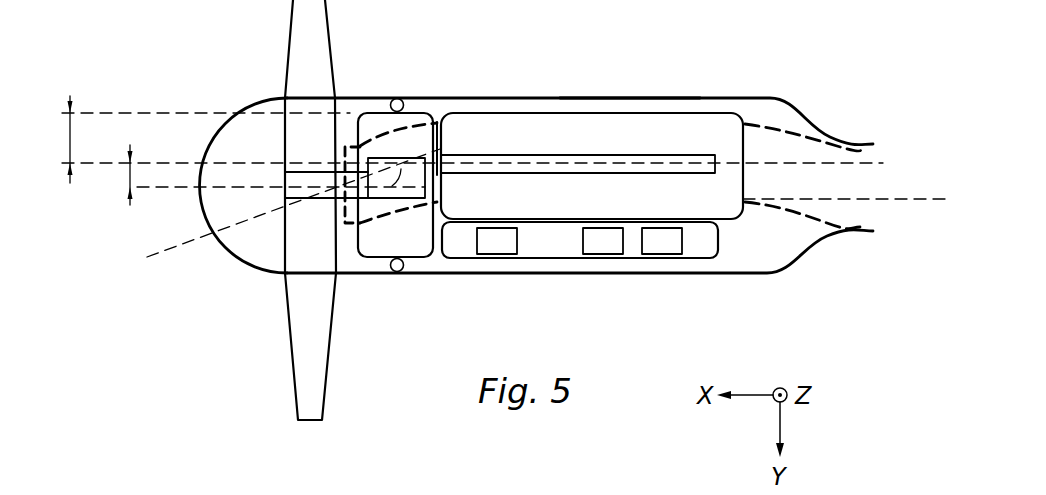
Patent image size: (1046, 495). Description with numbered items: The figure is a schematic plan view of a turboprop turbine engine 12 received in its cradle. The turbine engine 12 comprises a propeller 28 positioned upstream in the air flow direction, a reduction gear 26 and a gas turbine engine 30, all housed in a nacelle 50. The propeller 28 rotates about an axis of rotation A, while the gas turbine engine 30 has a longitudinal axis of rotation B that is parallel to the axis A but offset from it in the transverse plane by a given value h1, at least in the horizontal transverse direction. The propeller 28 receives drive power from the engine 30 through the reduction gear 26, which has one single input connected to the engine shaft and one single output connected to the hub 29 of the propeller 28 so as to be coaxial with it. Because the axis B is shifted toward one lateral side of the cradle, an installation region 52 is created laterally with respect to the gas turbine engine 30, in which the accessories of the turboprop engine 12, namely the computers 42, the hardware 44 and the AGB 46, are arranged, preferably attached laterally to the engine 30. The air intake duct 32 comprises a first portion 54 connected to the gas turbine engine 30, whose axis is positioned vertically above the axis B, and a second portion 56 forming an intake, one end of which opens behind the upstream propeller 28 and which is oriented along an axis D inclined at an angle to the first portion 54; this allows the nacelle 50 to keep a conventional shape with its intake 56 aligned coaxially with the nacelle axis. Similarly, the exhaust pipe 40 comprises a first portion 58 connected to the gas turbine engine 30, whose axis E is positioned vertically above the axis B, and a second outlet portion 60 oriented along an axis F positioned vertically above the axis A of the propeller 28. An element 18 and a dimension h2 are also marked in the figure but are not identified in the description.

The turbine engine 12 is at (695, 90).
The fastener 18 is at (404, 99).
The reduction gear 26 is at (413, 240).
The propeller 28 is at (310, 382).
The hub 29 is at (287, 192).
The gas turbine engine 30 is at (548, 113).
The air intake duct 32 is at (348, 128).
The exhaust pipe 40 is at (790, 224).
The computers 42 is at (603, 242).
The hardware 44 is at (662, 242).
The AGB 46 is at (497, 242).
The nacelle 50 is at (625, 98).
The installation region 52 is at (550, 260).
The first portion of the air intake duct 54 is at (437, 122).
The second portion of the air intake duct 56 is at (348, 225).
The first portion of the exhaust pipe 58 is at (757, 207).
The second outlet portion of the exhaust pipe 60 is at (860, 223).
The axis of rotation of the propeller A is at (173, 187).
The longitudinal axis of rotation of the gas turbine engine B is at (170, 163).
The axis of the second intake portion D is at (153, 258).
The axis of the first exhaust portion E is at (883, 163).
The axis of the second outlet portion F is at (913, 199).
The offset value h1 is at (114, 175).
The height h2 is at (58, 139).